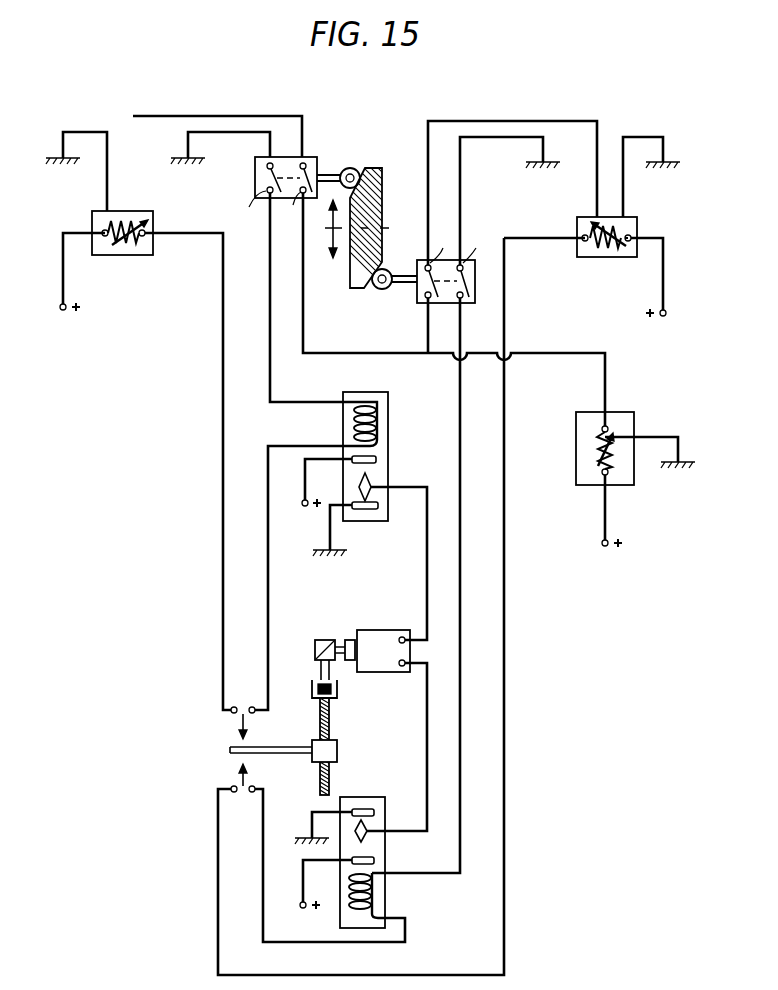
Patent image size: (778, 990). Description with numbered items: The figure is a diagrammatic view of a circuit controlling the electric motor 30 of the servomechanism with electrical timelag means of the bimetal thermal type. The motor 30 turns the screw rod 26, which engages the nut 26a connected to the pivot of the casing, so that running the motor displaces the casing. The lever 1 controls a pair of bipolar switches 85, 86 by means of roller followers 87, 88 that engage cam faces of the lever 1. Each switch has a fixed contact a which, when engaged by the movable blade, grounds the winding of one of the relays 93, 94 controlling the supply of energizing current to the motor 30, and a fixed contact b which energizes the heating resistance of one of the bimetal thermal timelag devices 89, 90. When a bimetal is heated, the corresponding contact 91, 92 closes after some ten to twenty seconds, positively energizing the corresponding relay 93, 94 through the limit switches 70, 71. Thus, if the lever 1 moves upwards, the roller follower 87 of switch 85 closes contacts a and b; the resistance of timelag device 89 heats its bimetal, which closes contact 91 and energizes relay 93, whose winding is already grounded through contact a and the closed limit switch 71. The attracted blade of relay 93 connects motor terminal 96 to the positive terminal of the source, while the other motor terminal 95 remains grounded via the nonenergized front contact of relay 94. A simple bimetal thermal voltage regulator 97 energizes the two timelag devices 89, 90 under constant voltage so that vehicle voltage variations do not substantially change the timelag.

The lever 1 is at (385, 186).
The screw rod 26 is at (320, 790).
The nut 26a is at (337, 753).
The electric motor 30 is at (367, 645).
The limit switch 70 is at (253, 793).
The limit switch 71 is at (258, 706).
The bipolar switch 85 is at (311, 162).
The bipolar switch 86 is at (420, 304).
The roller follower 87 is at (346, 168).
The roller follower 88 is at (374, 244).
The bimetal thermal timelag device 89 is at (112, 255).
The bimetal thermal timelag device 90 is at (616, 253).
The contact 91 is at (142, 237).
The contact 92 is at (586, 243).
The relay 93 is at (388, 447).
The relay 94 is at (374, 783).
The motor terminal 95 is at (403, 667).
The motor terminal 96 is at (404, 637).
The voltage regulator 97 is at (578, 466).